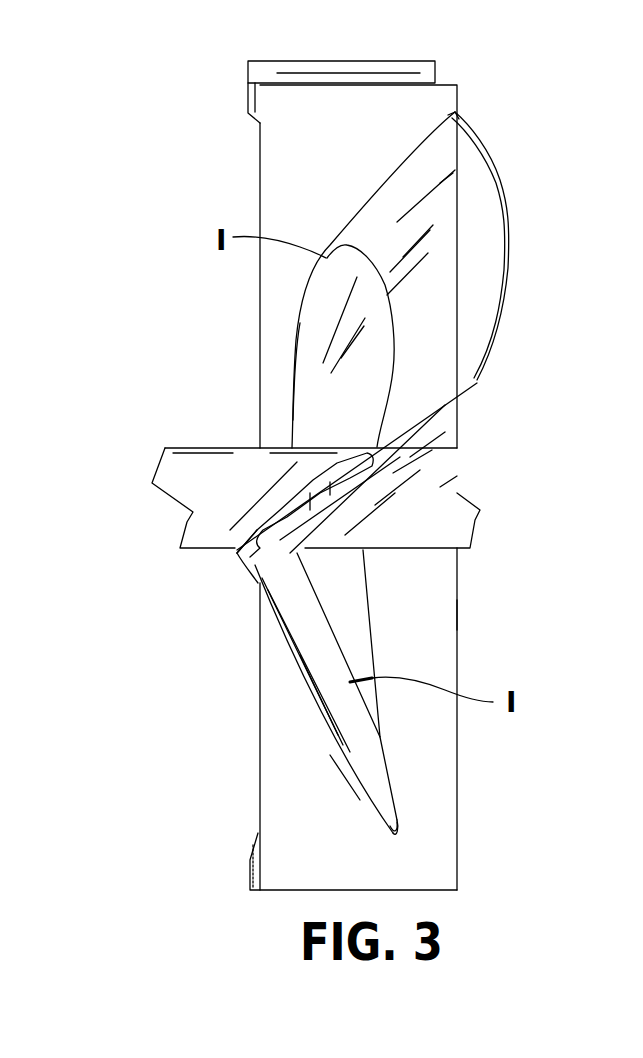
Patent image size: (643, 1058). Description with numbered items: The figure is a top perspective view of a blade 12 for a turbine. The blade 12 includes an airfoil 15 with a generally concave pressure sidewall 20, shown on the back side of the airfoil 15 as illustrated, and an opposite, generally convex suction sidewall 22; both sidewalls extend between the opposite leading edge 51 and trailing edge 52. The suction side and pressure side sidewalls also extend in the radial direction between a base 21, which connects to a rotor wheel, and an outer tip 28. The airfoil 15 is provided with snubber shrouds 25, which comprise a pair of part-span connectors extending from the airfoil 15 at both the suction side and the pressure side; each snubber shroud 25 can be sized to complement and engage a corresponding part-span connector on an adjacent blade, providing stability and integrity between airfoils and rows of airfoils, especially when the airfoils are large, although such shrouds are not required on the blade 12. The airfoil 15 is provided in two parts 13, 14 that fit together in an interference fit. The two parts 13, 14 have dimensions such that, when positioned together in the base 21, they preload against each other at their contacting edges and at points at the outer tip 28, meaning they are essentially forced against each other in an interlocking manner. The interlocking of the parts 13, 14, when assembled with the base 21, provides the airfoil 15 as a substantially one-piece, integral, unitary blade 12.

The blade 12 is at (175, 166).
The first airfoil part 13 is at (363, 407).
The second airfoil part 14 is at (478, 232).
The airfoil 15 is at (540, 617).
The pressure sidewall 20 is at (387, 298).
The base 21 is at (355, 695).
The suction sidewall 22 is at (308, 345).
The snubber shrouds 25 is at (162, 456).
The outer tip 28 is at (172, 586).
The leading edge 51 is at (455, 112).
The trailing edge 52 is at (397, 820).